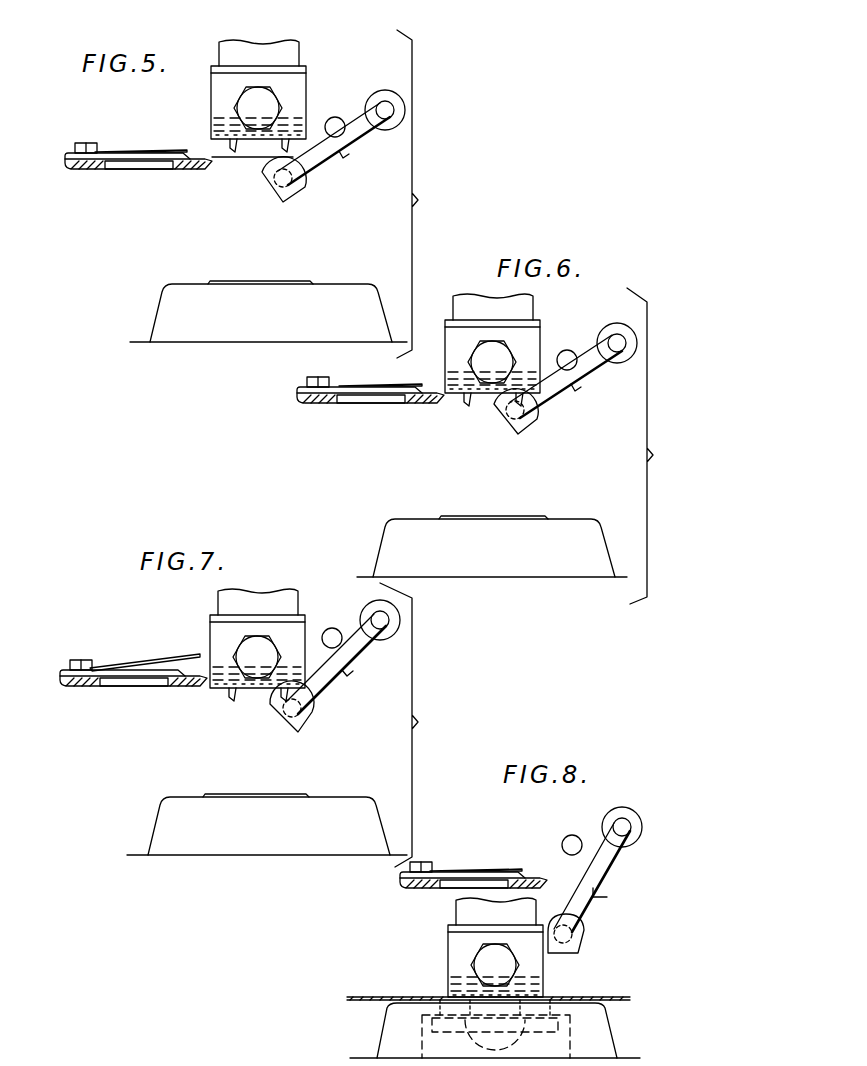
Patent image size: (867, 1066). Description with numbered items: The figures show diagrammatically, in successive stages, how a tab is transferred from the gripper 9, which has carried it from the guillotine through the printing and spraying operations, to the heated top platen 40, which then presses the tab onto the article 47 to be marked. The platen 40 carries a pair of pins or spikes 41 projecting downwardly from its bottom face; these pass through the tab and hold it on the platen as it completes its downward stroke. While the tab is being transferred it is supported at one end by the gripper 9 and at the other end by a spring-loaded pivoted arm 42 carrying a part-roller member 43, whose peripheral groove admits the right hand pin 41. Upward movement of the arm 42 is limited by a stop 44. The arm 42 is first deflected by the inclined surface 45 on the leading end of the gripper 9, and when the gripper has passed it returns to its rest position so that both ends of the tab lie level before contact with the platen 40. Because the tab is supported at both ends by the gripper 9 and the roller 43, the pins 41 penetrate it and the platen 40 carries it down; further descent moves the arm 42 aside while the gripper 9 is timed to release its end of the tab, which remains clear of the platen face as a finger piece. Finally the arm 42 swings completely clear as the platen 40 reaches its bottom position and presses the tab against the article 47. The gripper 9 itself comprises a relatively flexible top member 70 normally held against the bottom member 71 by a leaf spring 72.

In FIG. 5, the gripper 9 is at (122, 172).
In FIG. 6, the gripper 9 is at (370, 395).
In FIG. 7, the gripper 9 is at (133, 678).
In FIG. 8, the gripper 9 is at (462, 880).
In FIG. 5, the heated top platen 40 is at (286, 110).
In FIG. 6, the heated top platen 40 is at (518, 352).
In FIG. 7, the heated top platen 40 is at (270, 640).
In FIG. 8, the heated top platen 40 is at (447, 967).
In FIG. 5, the pins or spikes 41 is at (231, 146).
In FIG. 6, the pins or spikes 41 is at (503, 406).
In FIG. 7, the pins or spikes 41 is at (283, 690).
In FIG. 5, the spring-loaded pivoted arm 42 is at (313, 172).
In FIG. 6, the spring-loaded pivoted arm 42 is at (555, 400).
In FIG. 7, the spring-loaded pivoted arm 42 is at (340, 690).
In FIG. 8, the spring-loaded pivoted arm 42 is at (585, 915).
In FIG. 5, the part-roller member 43 is at (287, 196).
In FIG. 6, the part-roller member 43 is at (540, 424).
In FIG. 7, the part-roller member 43 is at (308, 720).
In FIG. 8, the part-roller member 43 is at (580, 945).
In FIG. 5, the stop 44 is at (339, 118).
In FIG. 6, the stop 44 is at (575, 350).
In FIG. 7, the stop 44 is at (336, 628).
In FIG. 8, the stop 44 is at (569, 836).
In FIG. 5, the inclined surface 45 is at (75, 168).
In FIG. 6, the inclined surface 45 is at (306, 404).
In FIG. 7, the inclined surface 45 is at (70, 686).
In FIG. 8, the inclined surface 45 is at (410, 886).
In FIG. 8, the article 47 is at (606, 1001).
In FIG. 5, the flexible top member 70 is at (150, 164).
In FIG. 6, the flexible top member 70 is at (388, 396).
In FIG. 7, the flexible top member 70 is at (143, 680).
In FIG. 8, the flexible top member 70 is at (460, 893).
In FIG. 5, the bottom member 71 is at (190, 169).
In FIG. 6, the bottom member 71 is at (431, 404).
In FIG. 7, the bottom member 71 is at (190, 684).
In FIG. 8, the bottom member 71 is at (545, 882).
In FIG. 5, the leaf spring 72 is at (147, 152).
In FIG. 6, the leaf spring 72 is at (372, 387).
In FIG. 7, the leaf spring 72 is at (145, 660).
In FIG. 8, the leaf spring 72 is at (500, 870).